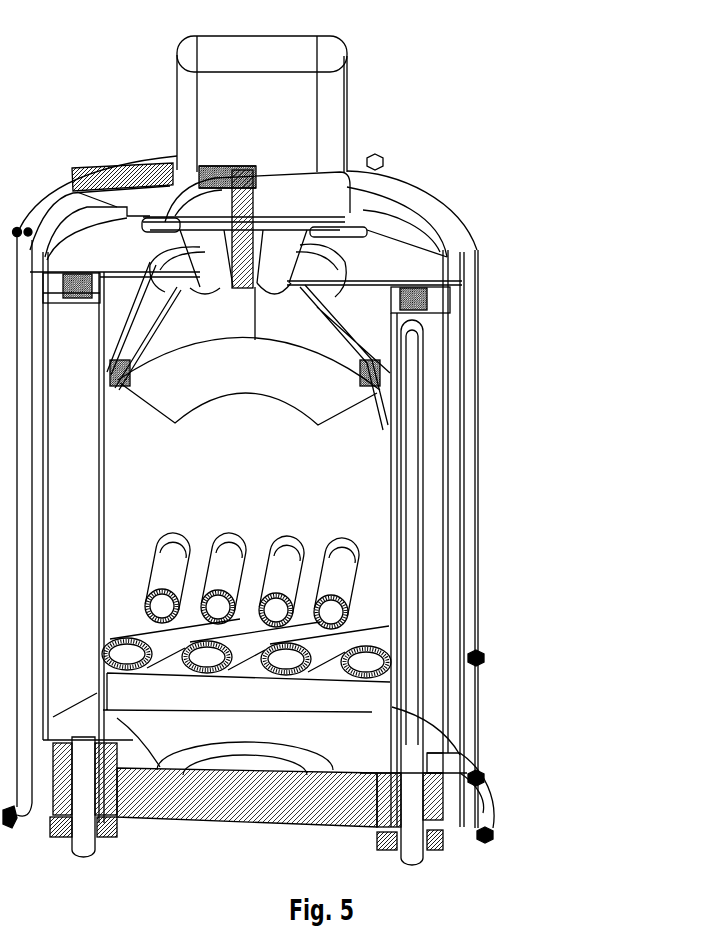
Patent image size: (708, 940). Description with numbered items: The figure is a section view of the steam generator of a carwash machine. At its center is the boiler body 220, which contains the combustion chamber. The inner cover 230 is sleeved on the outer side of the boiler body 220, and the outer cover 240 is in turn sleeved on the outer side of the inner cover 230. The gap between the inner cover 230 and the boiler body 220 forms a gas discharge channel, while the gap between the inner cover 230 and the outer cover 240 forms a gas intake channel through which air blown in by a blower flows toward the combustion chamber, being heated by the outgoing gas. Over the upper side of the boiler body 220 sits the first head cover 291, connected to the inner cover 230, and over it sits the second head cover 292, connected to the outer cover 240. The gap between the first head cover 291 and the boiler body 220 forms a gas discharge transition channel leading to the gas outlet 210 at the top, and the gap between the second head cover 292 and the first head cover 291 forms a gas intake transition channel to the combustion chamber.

The gas outlet 210 is at (220, 103).
The second head cover 292 is at (438, 208).
The first head cover 291 is at (393, 272).
The outer cover 240 is at (479, 356).
The inner cover 230 is at (470, 426).
The boiler body 220 is at (452, 486).